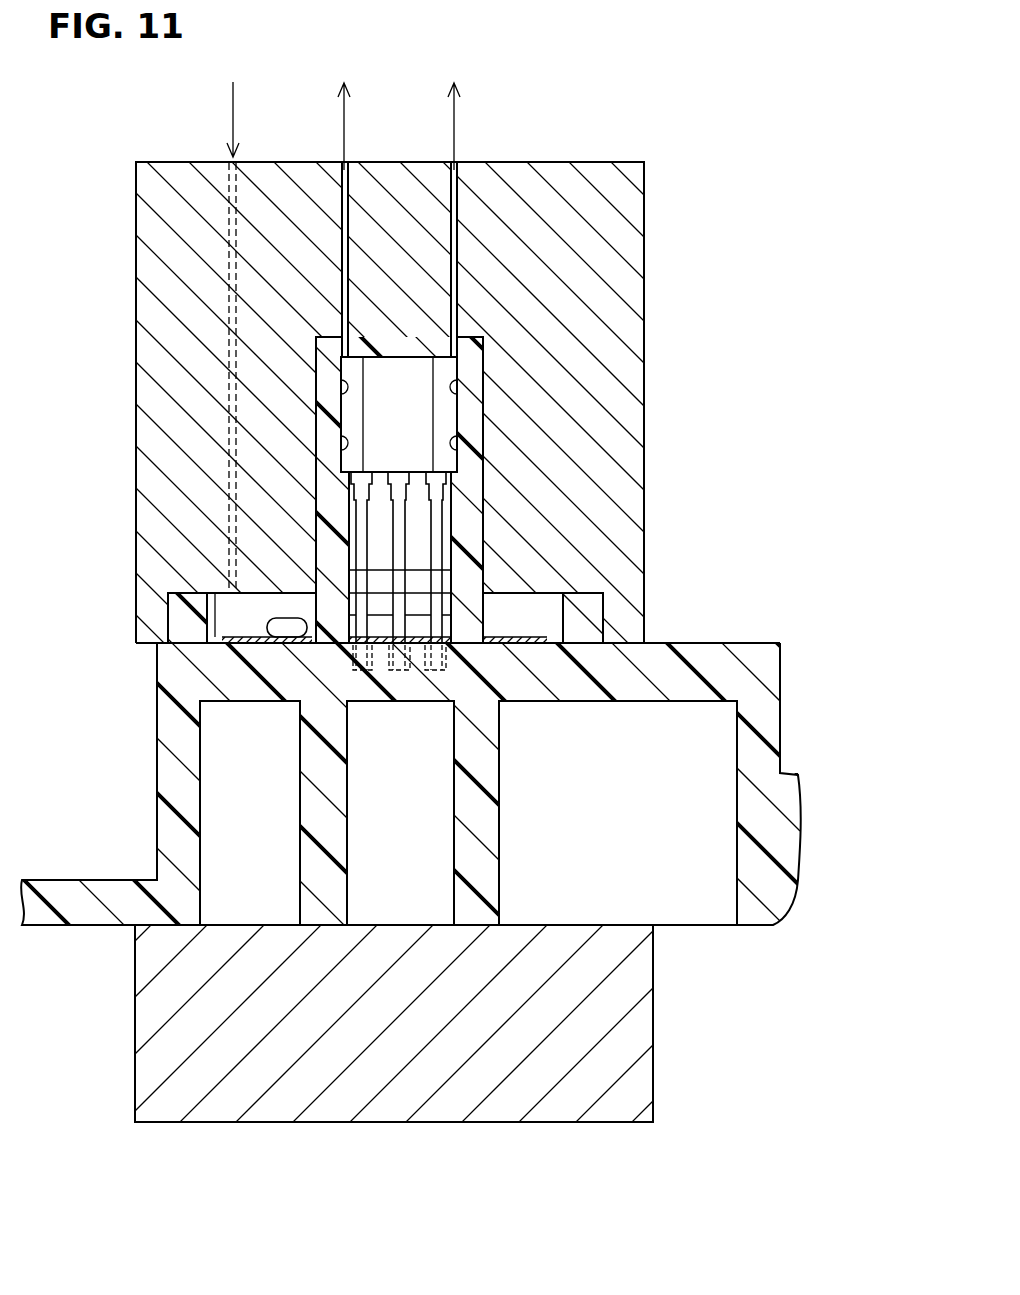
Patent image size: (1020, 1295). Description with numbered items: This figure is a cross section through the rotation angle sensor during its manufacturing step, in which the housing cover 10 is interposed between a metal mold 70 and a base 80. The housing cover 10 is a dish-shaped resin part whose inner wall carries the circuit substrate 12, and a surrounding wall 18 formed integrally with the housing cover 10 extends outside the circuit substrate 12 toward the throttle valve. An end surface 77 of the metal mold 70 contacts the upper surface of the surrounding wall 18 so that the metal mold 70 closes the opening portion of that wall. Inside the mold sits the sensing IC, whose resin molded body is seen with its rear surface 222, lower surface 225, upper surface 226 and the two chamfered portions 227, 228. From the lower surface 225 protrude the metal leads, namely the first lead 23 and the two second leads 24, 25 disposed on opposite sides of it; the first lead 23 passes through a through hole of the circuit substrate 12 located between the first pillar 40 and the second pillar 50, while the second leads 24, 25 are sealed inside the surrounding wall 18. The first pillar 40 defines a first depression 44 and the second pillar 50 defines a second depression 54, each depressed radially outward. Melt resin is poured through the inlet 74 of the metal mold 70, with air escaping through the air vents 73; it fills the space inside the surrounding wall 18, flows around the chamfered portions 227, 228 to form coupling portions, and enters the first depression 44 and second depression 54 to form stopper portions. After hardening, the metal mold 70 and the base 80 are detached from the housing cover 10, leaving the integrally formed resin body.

The housing cover 10 is at (757, 726).
The circuit substrate 12 is at (232, 637).
The surrounding wall 18 is at (190, 628).
The first lead 23 is at (397, 603).
The second lead 24 is at (437, 602).
The second lead 25 is at (360, 603).
The first pillar 40 is at (452, 550).
The first depression 44 is at (450, 432).
The second pillar 50 is at (327, 497).
The second depression 54 is at (346, 438).
The metal mold 70 is at (190, 263).
The air vent 73 is at (350, 168).
The inlet 74 is at (225, 168).
The end surface 77 is at (187, 610).
The base 80 is at (227, 1090).
The rear surface 222 is at (395, 390).
The lower surface 225 is at (417, 480).
The upper surface 226 is at (395, 356).
The chamfered portion 227 is at (450, 407).
The chamfered portion 228 is at (318, 410).